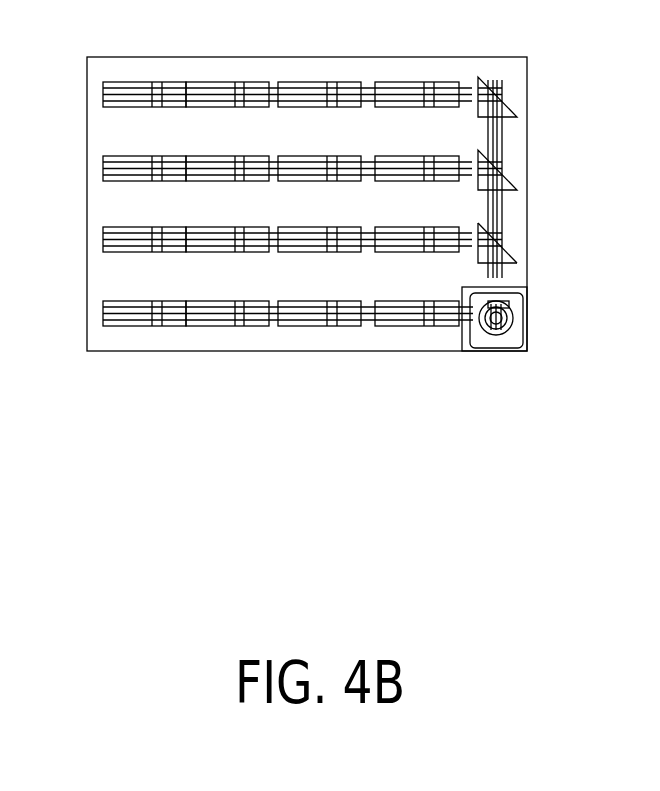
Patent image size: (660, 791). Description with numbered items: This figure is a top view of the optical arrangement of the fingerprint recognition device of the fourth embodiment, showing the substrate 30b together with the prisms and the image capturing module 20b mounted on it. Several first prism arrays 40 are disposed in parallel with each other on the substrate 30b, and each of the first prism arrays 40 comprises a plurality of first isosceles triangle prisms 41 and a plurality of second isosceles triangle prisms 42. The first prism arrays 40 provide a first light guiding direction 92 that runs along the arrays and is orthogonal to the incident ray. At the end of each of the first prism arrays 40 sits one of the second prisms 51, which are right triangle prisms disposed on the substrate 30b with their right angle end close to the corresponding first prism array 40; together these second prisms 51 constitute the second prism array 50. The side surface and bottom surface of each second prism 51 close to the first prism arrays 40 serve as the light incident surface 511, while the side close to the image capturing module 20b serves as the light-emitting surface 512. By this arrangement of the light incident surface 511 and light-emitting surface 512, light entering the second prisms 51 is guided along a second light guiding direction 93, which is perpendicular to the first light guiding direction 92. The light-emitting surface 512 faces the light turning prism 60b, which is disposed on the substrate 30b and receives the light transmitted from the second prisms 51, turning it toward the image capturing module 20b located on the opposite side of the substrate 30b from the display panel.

The substrate 30b is at (100, 77).
The first prism arrays 40 is at (264, 210).
The first isosceles triangle prisms 41 is at (126, 92).
The second isosceles triangle prisms 42 is at (181, 92).
The second prism array 50 is at (536, 161).
The second prisms 51 is at (535, 188).
The light incident surface 511 is at (478, 228).
The light-emitting surface 512 is at (507, 255).
The second light guiding direction 93 is at (502, 132).
The first light guiding direction 92 is at (181, 318).
The image capturing module 20b is at (527, 349).
The light turning prism 60b is at (512, 316).